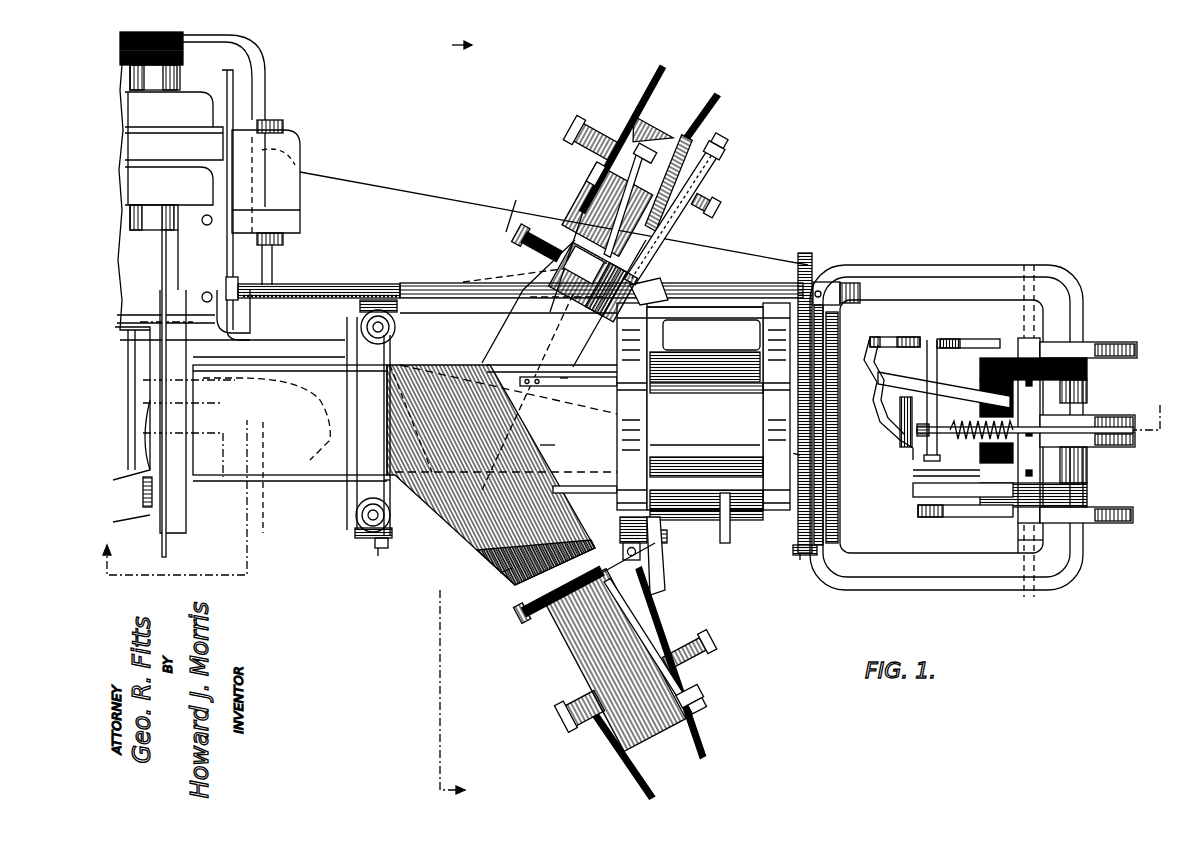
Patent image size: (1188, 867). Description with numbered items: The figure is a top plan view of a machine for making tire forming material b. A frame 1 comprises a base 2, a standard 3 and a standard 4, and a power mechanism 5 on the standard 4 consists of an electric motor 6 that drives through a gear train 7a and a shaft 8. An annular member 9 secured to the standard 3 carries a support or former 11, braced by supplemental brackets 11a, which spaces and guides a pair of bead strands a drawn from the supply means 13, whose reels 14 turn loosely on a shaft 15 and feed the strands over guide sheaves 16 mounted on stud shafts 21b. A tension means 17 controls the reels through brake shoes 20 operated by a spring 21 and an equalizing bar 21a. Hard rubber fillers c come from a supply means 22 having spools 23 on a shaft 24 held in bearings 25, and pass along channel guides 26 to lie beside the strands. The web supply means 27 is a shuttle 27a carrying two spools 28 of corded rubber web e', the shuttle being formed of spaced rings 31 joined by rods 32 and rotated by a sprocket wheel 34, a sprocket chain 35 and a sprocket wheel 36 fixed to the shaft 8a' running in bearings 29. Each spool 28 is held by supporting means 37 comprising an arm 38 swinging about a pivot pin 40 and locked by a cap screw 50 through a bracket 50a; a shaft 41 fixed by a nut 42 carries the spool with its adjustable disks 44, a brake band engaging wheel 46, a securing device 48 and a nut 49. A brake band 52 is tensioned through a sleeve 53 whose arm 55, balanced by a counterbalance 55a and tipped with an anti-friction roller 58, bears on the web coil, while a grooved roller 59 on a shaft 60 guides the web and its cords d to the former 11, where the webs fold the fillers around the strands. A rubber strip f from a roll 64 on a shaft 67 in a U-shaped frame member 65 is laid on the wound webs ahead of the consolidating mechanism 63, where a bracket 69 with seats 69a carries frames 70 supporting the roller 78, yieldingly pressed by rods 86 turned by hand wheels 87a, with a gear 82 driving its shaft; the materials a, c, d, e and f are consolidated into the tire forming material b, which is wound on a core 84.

The frame 1 is at (462, 324).
The base 2 is at (632, 378).
The standard 3 is at (761, 419).
The standard 4 is at (175, 197).
The power mechanism 5 is at (272, 82).
The electric motor 6 is at (174, 148).
The gear train 7a is at (190, 53).
The shaft 8 is at (277, 262).
The shaft 8a' is at (601, 275).
The annular member 9 is at (727, 532).
The support (former) 11 is at (561, 434).
The supplemental brackets 11a is at (568, 378).
The supply means for bead material 13 is at (1061, 432).
The reels 14 is at (1085, 397).
The shaft 15 is at (1045, 558).
The guide sheaves 16 is at (873, 370).
The tension means 17 is at (944, 393).
The shoes 20 is at (917, 517).
The spring 21 is at (950, 443).
The equalizing bar 21a is at (955, 345).
The stud shaft 21b is at (895, 345).
The supply means for filler material 22 is at (1020, 419).
The spools 23 is at (1045, 345).
The shaft 24 is at (1032, 590).
The bearings 25 is at (1025, 290).
The guides 26 is at (587, 370).
The web supply means 27 is at (705, 413).
The shuttle 27a is at (715, 455).
The spools 28 is at (643, 446).
The bearings 29 is at (240, 312).
The rings 31 is at (625, 450).
The rods 32 is at (665, 385).
The sprocket wheel 34 is at (800, 562).
The sprocket chain 35 is at (820, 272).
The sprocket wheel 36 is at (806, 255).
The spool supporting means 37 is at (666, 572).
The arm 38 is at (690, 243).
The pivot pin 40 is at (650, 553).
The shaft 41 is at (718, 205).
The nut 42 is at (722, 195).
The side plates (disks) 44 is at (660, 68).
The brake band engaging wheel 46 is at (722, 160).
The securing device 48 is at (598, 124).
The nut 49 is at (575, 145).
The securing device (cap screw) 50 is at (665, 530).
The bracket 50a is at (690, 570).
The brake band 52 is at (740, 148).
The sleeve 53 is at (600, 285).
The arm 55 is at (600, 176).
The counterbalance 55a is at (545, 285).
The anti-friction roller 58 is at (665, 150).
The roller 59 is at (542, 238).
The shaft 60 is at (525, 240).
The consolidating mechanism 63 is at (406, 493).
The roll 64 is at (143, 490).
The frame member 65 is at (180, 512).
The shaft 67 is at (166, 538).
The bracket 69 is at (328, 500).
The seats 69a is at (360, 322).
The frames 70 is at (396, 327).
The roller 78 is at (392, 352).
The gear 82 is at (395, 292).
The core 84 is at (186, 450).
The rod 86 is at (382, 545).
The hand wheel 87a is at (379, 556).
The bead material a is at (982, 375).
The tire forming material b is at (259, 477).
The fillers c is at (887, 418).
The cords d is at (500, 573).
The web material e is at (597, 351).
The corded rubber web e' is at (491, 459).
The rubber strip f is at (290, 423).